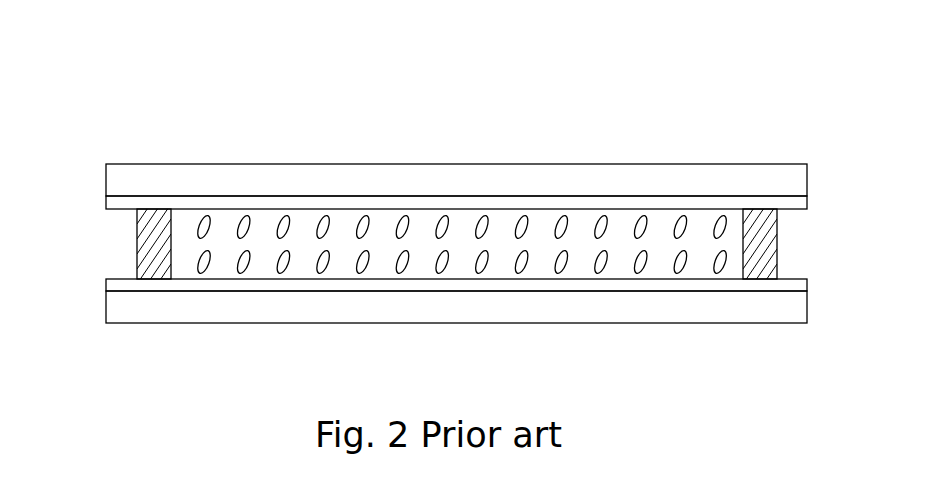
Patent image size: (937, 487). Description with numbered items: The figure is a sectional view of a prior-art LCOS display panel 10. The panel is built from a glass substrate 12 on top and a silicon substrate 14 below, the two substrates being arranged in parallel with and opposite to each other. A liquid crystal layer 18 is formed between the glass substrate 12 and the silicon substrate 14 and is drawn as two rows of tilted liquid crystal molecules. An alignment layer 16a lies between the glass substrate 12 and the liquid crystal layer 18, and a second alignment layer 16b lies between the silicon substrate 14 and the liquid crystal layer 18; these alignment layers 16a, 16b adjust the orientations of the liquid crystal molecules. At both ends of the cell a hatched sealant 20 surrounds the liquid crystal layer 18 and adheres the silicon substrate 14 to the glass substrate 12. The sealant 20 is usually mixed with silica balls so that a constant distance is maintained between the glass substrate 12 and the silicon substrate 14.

The LCOS display panel 10 is at (792, 62).
The glass substrate 12 is at (798, 178).
The silicon substrate 14 is at (798, 302).
The alignment layer 16a is at (115, 202).
The alignment layer 16b is at (115, 285).
The liquid crystal layer 18 is at (423, 230).
The sealant 20 is at (152, 245).